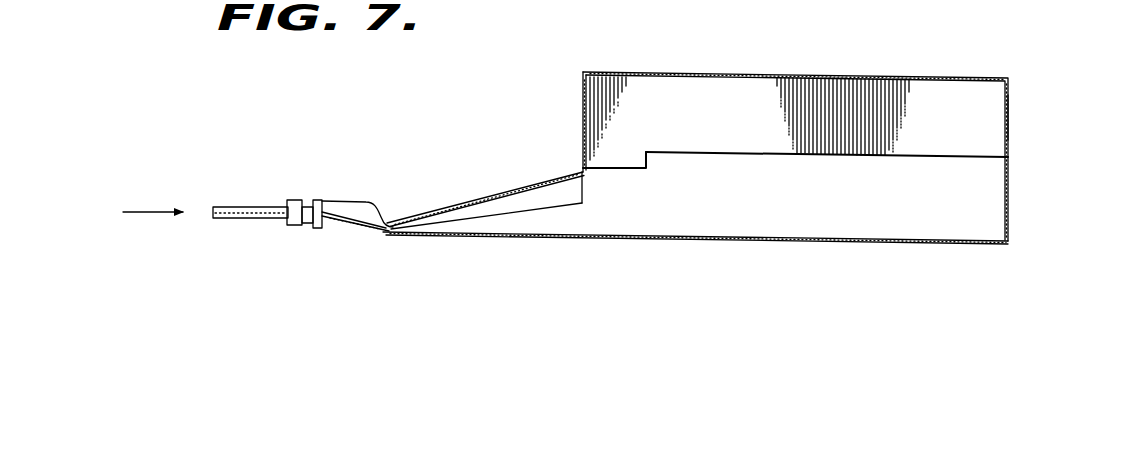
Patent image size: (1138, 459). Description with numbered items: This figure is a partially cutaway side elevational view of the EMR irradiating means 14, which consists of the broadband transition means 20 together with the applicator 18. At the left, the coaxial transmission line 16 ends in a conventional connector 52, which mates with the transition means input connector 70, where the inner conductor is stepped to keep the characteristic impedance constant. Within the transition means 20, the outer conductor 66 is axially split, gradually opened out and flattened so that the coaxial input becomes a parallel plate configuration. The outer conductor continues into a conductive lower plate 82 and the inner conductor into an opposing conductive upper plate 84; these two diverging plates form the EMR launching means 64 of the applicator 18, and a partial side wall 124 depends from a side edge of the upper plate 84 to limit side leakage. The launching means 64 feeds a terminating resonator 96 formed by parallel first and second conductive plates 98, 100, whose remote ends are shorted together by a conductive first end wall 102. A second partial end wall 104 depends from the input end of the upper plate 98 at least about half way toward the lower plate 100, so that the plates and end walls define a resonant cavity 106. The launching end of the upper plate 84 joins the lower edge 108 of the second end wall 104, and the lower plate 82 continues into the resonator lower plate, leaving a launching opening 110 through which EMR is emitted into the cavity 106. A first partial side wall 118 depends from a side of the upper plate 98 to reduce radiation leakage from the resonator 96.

The EMR irradiating means 14 is at (400, 107).
The transmission line 16 is at (243, 205).
The applicator 18 is at (727, 58).
The broadband transition means 20 is at (343, 243).
The connector 52 is at (292, 200).
The EMR launching means 64 is at (460, 245).
The outer conductor of transition means 66 is at (353, 207).
The transition means input connector 70 is at (318, 199).
The conductive lower plate 82 is at (504, 237).
The conductive upper plate 84 is at (483, 198).
The resonator 96 is at (697, 252).
The first conductive plate 98 is at (817, 76).
The second conductive plate 100 is at (870, 241).
The first end wall 102 is at (1008, 118).
The second partial end wall 104 is at (582, 95).
The resonant cavity 106 is at (987, 200).
The lower edge of second end wall 108 is at (587, 172).
The launching opening 110 is at (578, 215).
The first partial side wall 118 is at (733, 153).
The second partial side wall of launching means 124 is at (543, 193).